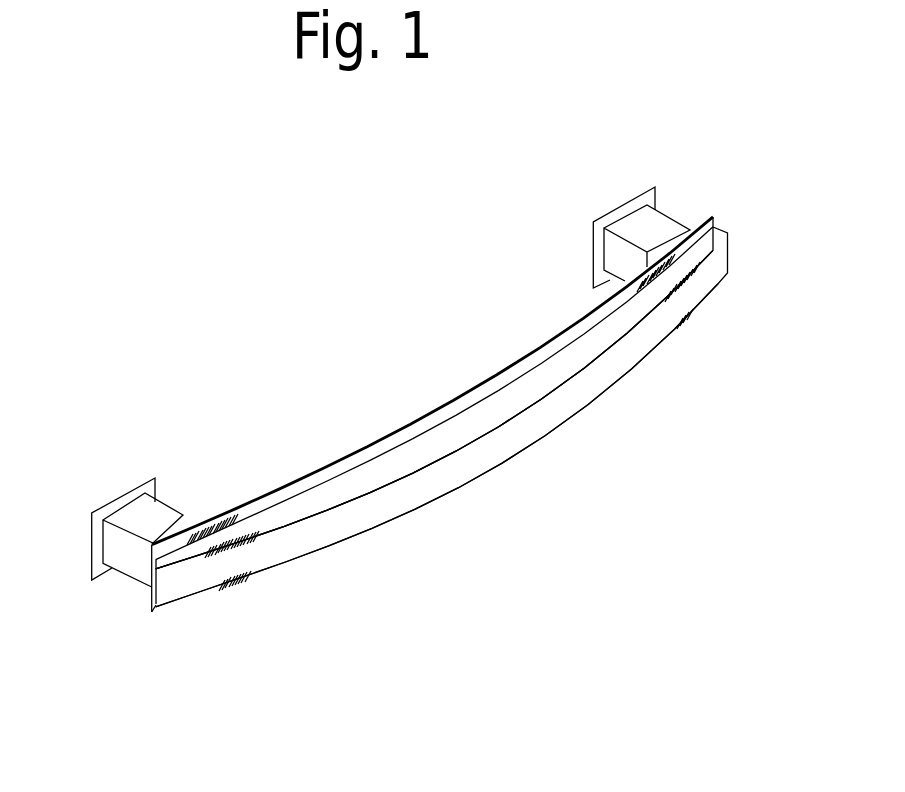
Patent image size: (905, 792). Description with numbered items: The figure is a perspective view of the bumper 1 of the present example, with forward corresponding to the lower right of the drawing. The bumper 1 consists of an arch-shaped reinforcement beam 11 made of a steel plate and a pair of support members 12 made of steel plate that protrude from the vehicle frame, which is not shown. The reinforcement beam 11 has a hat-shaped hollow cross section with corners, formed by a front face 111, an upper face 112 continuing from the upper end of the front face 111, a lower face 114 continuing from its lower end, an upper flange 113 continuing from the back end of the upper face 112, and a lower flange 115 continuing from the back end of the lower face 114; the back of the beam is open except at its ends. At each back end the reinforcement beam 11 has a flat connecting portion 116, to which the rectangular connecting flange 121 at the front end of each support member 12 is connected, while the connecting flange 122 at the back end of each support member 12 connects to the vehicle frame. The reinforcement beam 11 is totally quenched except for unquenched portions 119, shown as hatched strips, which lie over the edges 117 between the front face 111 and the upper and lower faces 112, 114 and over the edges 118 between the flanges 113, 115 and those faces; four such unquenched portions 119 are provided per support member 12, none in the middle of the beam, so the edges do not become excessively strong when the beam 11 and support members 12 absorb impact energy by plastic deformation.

The bumper 1 is at (522, 480).
The reinforcement beam 11 is at (457, 427).
The support member 12 is at (127, 570).
The front face 111 is at (543, 420).
The upper face 112 is at (533, 380).
The upper flange 113 is at (382, 452).
The lower face 114 is at (153, 611).
The lower flange 115 is at (157, 612).
The connecting portion 116 is at (198, 575).
The edge 117 is at (400, 520).
The edge 118 is at (277, 500).
The unquenched portion 119 is at (213, 518).
The connecting flange 121 is at (150, 535).
The connecting flange 122 is at (130, 498).